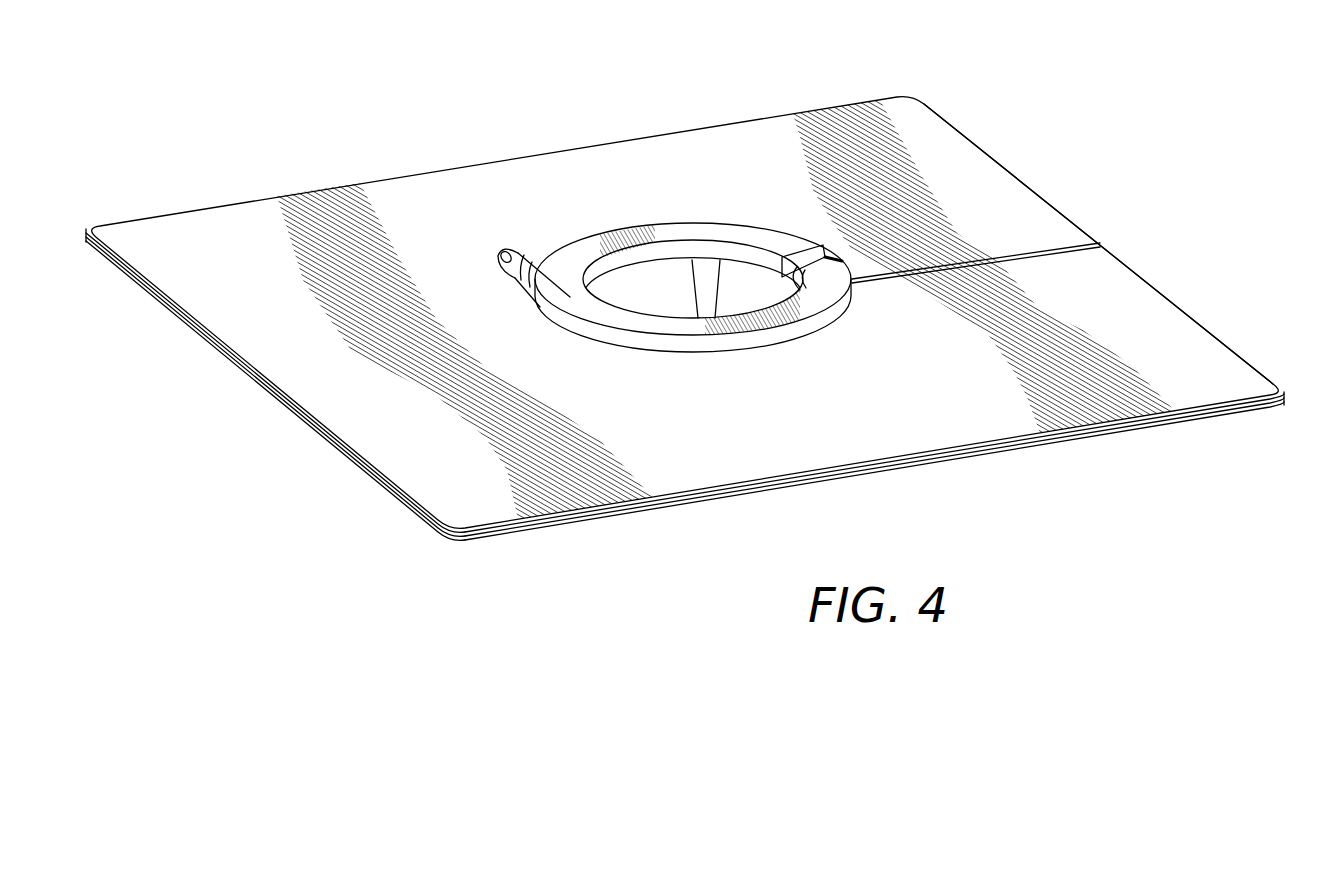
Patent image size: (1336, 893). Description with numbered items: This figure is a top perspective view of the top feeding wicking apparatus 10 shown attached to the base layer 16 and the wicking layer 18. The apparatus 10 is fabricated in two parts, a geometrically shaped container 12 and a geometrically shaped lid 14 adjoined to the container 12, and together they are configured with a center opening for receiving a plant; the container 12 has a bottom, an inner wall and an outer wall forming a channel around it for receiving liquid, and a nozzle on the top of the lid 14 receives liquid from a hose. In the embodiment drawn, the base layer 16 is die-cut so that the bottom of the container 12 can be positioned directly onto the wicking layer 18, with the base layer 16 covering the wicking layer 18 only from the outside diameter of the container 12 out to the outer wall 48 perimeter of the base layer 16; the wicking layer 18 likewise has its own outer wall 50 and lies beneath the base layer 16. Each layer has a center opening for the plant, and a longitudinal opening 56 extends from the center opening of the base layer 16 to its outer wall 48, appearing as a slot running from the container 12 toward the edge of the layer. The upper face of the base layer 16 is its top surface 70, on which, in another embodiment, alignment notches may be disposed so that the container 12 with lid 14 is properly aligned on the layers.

The top feeding wicking apparatus 10 is at (709, 270).
The container 12 is at (752, 264).
The lid 14 is at (576, 237).
The base layer 16 is at (709, 319).
The wicking layer 18 is at (353, 464).
The outer wall 48 is at (1232, 349).
The outer wall 50 is at (1152, 436).
The longitudinal opening 56 is at (1037, 243).
The top surface 70 is at (787, 414).